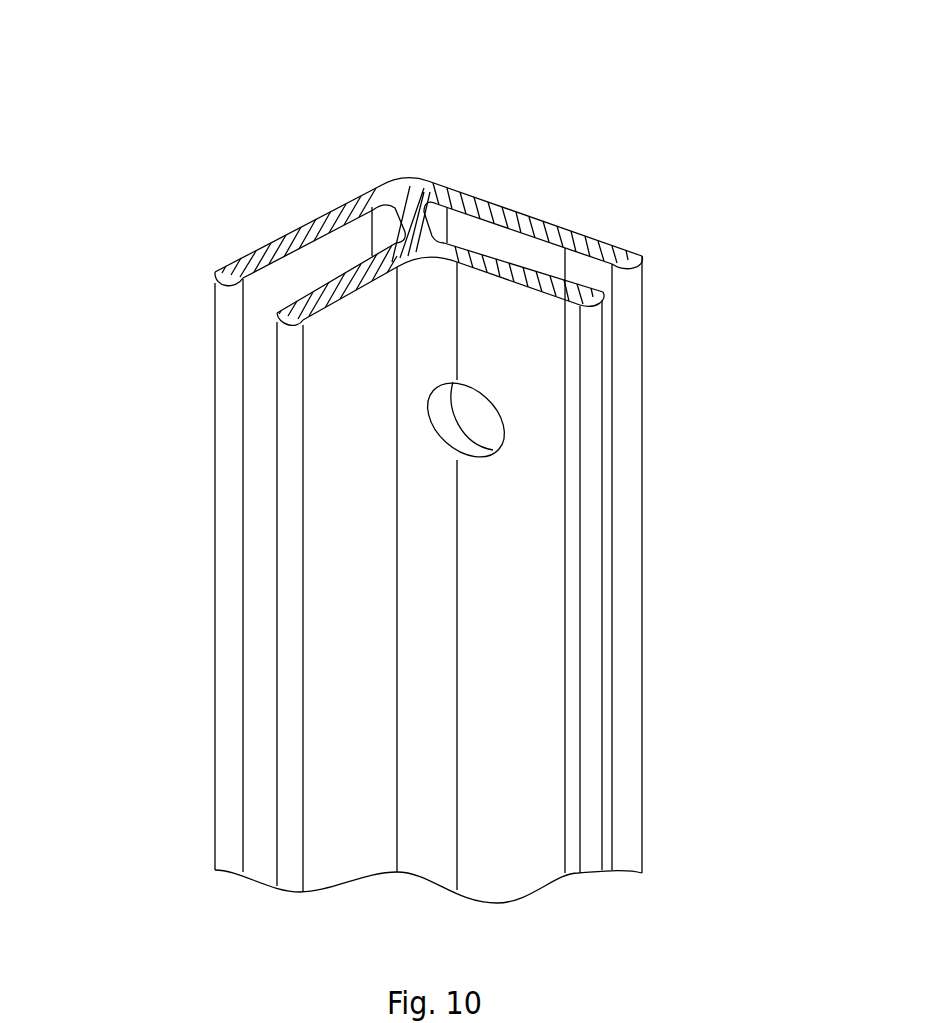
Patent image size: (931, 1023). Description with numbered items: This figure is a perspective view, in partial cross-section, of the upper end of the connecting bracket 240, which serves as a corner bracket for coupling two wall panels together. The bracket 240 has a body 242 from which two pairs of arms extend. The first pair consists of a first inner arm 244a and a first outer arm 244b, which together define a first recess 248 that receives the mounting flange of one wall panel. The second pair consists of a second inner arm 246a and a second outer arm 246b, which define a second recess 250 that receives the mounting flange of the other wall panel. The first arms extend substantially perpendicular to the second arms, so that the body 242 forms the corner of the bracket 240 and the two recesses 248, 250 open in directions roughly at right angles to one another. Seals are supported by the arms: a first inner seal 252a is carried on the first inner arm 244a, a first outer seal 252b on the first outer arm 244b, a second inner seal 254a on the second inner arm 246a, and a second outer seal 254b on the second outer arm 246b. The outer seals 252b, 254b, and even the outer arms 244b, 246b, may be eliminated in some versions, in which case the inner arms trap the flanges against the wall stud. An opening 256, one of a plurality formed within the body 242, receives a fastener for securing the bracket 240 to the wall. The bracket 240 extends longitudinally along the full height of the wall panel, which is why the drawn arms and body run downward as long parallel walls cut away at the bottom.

The connecting bracket 240 is at (422, 460).
The body 242 is at (405, 174).
The first inner arm 244a is at (292, 480).
The first outer arm 244b is at (235, 265).
The second inner arm 246a is at (593, 400).
The second outer arm 246b is at (605, 236).
The first recess 248 is at (333, 260).
The second recess 250 is at (520, 248).
The first inner seal 252a is at (314, 291).
The first outer seal 252b is at (250, 298).
The second inner seal 254a is at (582, 284).
The second outer seal 254b is at (593, 268).
The openings 256 is at (505, 430).